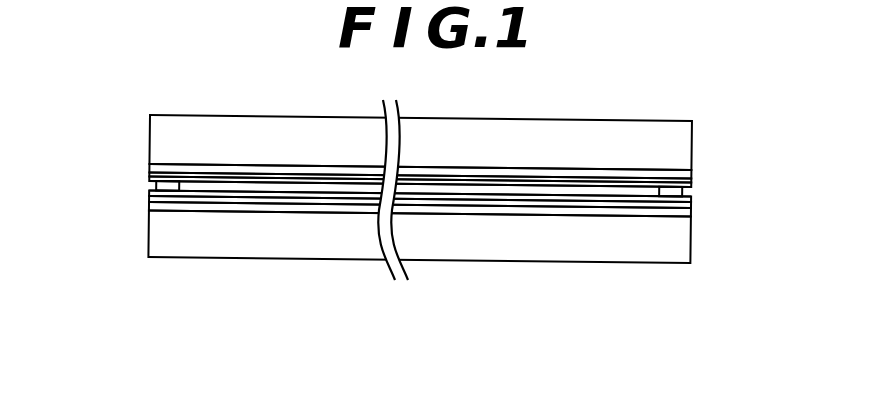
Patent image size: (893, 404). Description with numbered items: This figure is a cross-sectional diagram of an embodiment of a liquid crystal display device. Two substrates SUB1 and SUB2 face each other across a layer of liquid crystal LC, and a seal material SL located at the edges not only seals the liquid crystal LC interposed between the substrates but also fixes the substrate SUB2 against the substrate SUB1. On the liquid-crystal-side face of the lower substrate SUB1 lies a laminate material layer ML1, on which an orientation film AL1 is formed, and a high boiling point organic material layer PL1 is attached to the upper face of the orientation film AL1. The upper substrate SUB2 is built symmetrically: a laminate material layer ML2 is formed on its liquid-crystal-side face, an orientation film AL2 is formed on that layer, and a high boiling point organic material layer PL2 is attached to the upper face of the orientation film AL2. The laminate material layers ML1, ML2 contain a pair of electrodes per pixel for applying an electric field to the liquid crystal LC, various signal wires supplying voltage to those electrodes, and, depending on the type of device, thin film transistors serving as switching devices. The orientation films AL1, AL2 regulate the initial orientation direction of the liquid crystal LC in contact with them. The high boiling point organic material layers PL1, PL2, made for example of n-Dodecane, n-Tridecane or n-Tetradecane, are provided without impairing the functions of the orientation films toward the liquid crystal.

The substrate SUB1 is at (615, 250).
The substrate SUB2 is at (620, 146).
The laminate material layer ML1 is at (693, 213).
The laminate material layer ML2 is at (674, 172).
The orientation film AL1 is at (693, 206).
The orientation film AL2 is at (692, 181).
The high boiling point organic material layer PL1 is at (693, 200).
The high boiling point organic material layer PL2 is at (692, 184).
The liquid crystal LC is at (265, 192).
The seal material SL is at (149, 184).